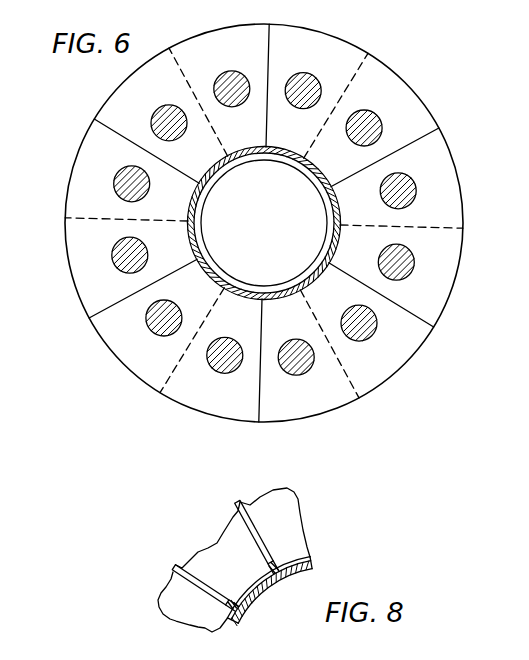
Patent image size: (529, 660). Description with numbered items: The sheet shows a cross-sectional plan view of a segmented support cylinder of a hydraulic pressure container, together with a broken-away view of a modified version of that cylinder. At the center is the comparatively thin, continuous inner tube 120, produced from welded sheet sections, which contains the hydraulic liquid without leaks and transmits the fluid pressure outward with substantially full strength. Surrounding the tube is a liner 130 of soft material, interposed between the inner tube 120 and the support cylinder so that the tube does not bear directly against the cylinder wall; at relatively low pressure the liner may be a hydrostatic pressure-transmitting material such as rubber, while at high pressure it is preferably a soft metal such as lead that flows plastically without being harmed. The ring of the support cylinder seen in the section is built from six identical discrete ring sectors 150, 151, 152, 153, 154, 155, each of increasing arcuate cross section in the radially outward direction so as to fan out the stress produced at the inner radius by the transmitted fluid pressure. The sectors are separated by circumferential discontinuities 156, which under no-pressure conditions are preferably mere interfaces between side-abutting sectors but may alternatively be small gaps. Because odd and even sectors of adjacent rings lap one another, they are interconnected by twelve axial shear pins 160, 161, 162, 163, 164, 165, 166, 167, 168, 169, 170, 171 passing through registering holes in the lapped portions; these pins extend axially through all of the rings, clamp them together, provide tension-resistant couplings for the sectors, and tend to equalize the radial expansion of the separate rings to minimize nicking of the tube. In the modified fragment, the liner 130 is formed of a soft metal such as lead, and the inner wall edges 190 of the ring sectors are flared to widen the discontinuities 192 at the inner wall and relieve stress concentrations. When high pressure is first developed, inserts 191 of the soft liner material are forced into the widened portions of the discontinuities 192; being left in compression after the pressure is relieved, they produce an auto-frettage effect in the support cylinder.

In FIG. 6, the inner tube 120 is at (220, 178).
In FIG. 8, the inner tube 120 is at (255, 601).
In FIG. 6, the liner 130 is at (262, 147).
In FIG. 8, the liner 130 is at (240, 627).
In FIG. 6, the ring sector 150 is at (67, 193).
In FIG. 6, the ring sector 151 is at (141, 381).
In FIG. 6, the ring sector 152 is at (323, 413).
In FIG. 6, the ring sector 153 is at (460, 258).
In FIG. 6, the ring sector 154 is at (395, 73).
In FIG. 6, the ring sector 155 is at (112, 93).
In FIG. 6, the discontinuity 156 is at (420, 130).
In FIG. 6, the shear pin 160 is at (119, 169).
In FIG. 6, the shear pin 161 is at (117, 270).
In FIG. 6, the shear pin 162 is at (157, 335).
In FIG. 6, the shear pin 163 is at (221, 373).
In FIG. 6, the shear pin 164 is at (304, 374).
In FIG. 6, the shear pin 165 is at (373, 334).
In FIG. 6, the shear pin 166 is at (412, 259).
In FIG. 6, the shear pin 167 is at (412, 178).
In FIG. 6, the shear pin 168 is at (368, 110).
In FIG. 6, the shear pin 169 is at (304, 72).
In FIG. 6, the shear pin 170 is at (229, 70).
In FIG. 6, the shear pin 171 is at (153, 114).
In FIG. 8, the inner wall edge 190 is at (287, 552).
In FIG. 8, the insert 191 is at (268, 557).
In FIG. 8, the discontinuity 192 is at (249, 508).